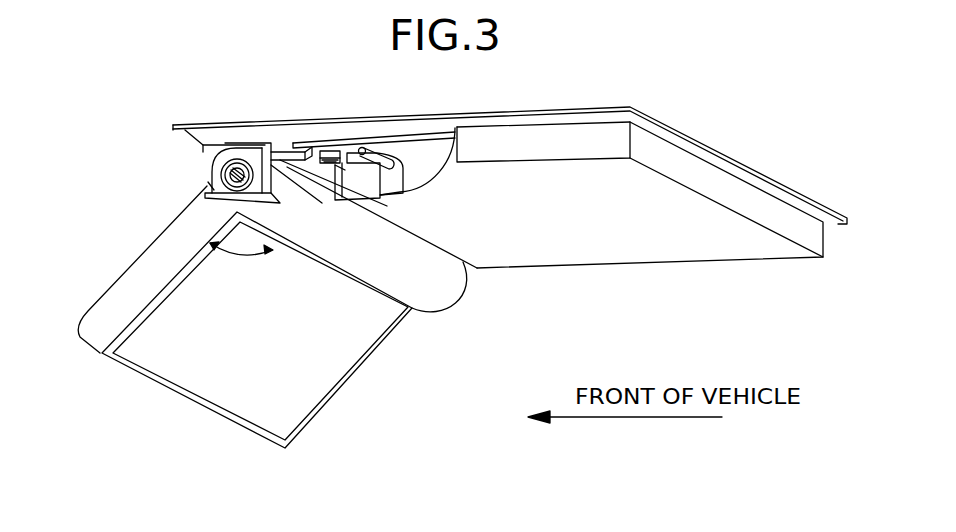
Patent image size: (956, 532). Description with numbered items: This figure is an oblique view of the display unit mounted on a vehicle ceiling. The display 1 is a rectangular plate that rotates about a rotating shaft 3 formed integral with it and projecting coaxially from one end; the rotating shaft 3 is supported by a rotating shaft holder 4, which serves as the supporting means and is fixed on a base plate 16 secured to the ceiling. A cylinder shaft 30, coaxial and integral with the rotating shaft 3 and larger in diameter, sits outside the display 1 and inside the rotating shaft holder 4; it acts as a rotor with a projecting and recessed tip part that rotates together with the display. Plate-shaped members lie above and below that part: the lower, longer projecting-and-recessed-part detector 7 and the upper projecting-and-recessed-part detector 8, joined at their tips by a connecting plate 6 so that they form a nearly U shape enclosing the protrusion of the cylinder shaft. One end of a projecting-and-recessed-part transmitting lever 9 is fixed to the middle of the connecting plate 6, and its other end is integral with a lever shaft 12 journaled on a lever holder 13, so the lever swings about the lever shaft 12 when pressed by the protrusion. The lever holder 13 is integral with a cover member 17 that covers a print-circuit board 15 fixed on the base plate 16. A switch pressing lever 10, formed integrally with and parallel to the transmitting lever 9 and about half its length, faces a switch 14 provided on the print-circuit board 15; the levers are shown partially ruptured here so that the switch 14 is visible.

The display 1 is at (95, 302).
The rotating shaft 3 is at (207, 186).
The rotating shaft holder 4 is at (197, 124).
The connecting plate 6 is at (280, 183).
The projecting-and-recessed-part detector 7 is at (203, 203).
The projecting-and-recessed-part detector 8 is at (250, 148).
The projecting-and-recessed-part transmitting lever 9 is at (287, 150).
The switch pressing lever 10 is at (337, 170).
The lever shaft 12 is at (380, 148).
The lever holder 13 is at (397, 178).
The switch 14 is at (337, 149).
The print-circuit board 15 is at (317, 140).
The base plate 16 is at (567, 110).
The cover member 17 is at (700, 248).
The cylinder shaft 30 is at (221, 175).